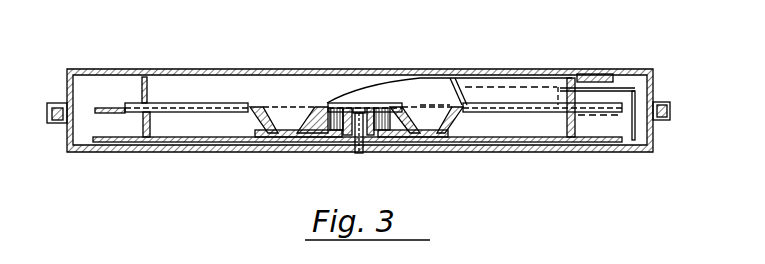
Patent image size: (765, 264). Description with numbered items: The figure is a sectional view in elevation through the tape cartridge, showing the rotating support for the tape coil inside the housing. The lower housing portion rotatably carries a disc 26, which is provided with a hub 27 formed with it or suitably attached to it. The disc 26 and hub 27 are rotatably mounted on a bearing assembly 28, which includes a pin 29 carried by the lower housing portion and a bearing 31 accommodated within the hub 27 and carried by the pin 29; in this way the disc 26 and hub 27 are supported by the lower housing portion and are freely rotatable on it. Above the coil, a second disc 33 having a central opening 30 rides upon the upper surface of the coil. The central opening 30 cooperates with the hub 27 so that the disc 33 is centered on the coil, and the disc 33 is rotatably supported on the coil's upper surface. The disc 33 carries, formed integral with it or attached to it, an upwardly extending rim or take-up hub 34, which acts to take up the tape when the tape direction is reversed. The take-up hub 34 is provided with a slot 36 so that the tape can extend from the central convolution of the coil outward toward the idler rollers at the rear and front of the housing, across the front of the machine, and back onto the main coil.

The disc 26 is at (227, 143).
The hub 27 is at (285, 145).
The bearing assembly 28 is at (364, 153).
The pin 29 is at (356, 153).
The central opening 30 is at (245, 102).
The bearing 31 is at (399, 152).
The disc 33 is at (123, 114).
The take-up hub 34 is at (146, 88).
The slot 36 is at (457, 77).